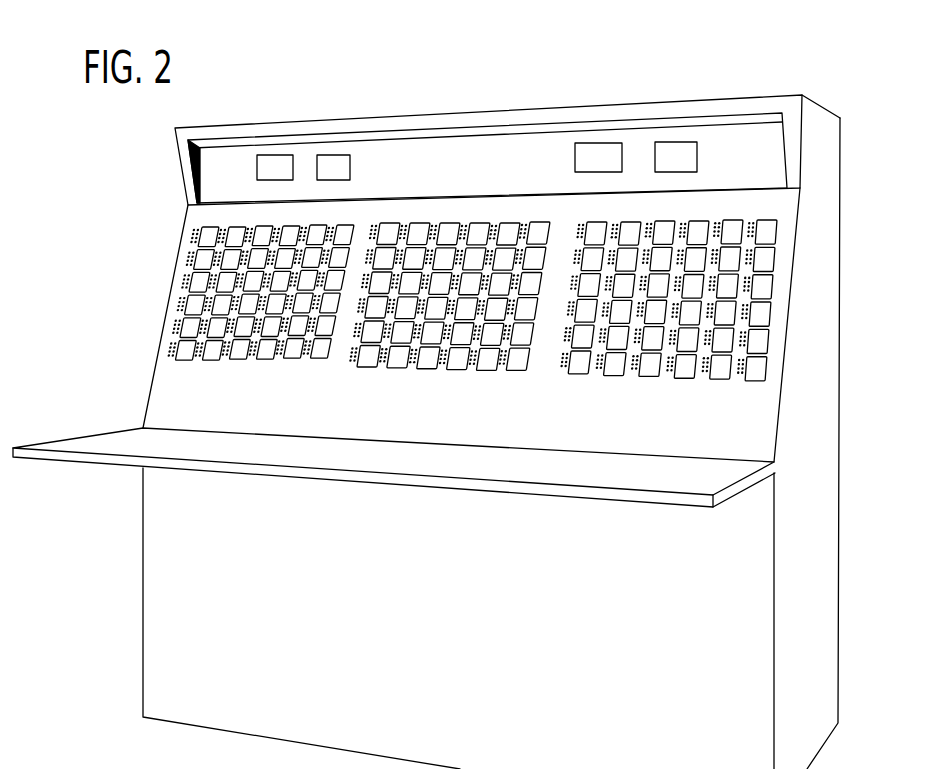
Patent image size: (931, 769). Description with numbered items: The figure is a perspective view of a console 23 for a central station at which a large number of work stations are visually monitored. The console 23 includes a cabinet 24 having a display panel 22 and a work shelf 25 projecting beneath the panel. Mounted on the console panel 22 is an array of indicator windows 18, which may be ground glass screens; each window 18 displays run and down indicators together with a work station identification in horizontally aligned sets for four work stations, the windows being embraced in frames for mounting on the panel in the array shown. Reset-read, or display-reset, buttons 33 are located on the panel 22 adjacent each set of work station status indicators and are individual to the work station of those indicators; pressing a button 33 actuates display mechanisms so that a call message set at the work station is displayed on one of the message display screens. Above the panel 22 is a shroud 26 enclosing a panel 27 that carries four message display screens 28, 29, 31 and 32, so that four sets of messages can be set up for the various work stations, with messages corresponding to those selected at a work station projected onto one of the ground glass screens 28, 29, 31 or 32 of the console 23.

The indicator window 18 is at (195, 257).
The console panel 22 is at (498, 411).
The console 23 is at (352, 638).
The cabinet 24 is at (622, 598).
The work shelf 25 is at (105, 448).
The shroud 26 is at (228, 130).
The panel 27 is at (438, 147).
The message display screen 28 is at (278, 162).
The message display screen 29 is at (333, 163).
The message display screen 31 is at (597, 153).
The message display screen 32 is at (678, 152).
The reset-read button 33 is at (747, 282).